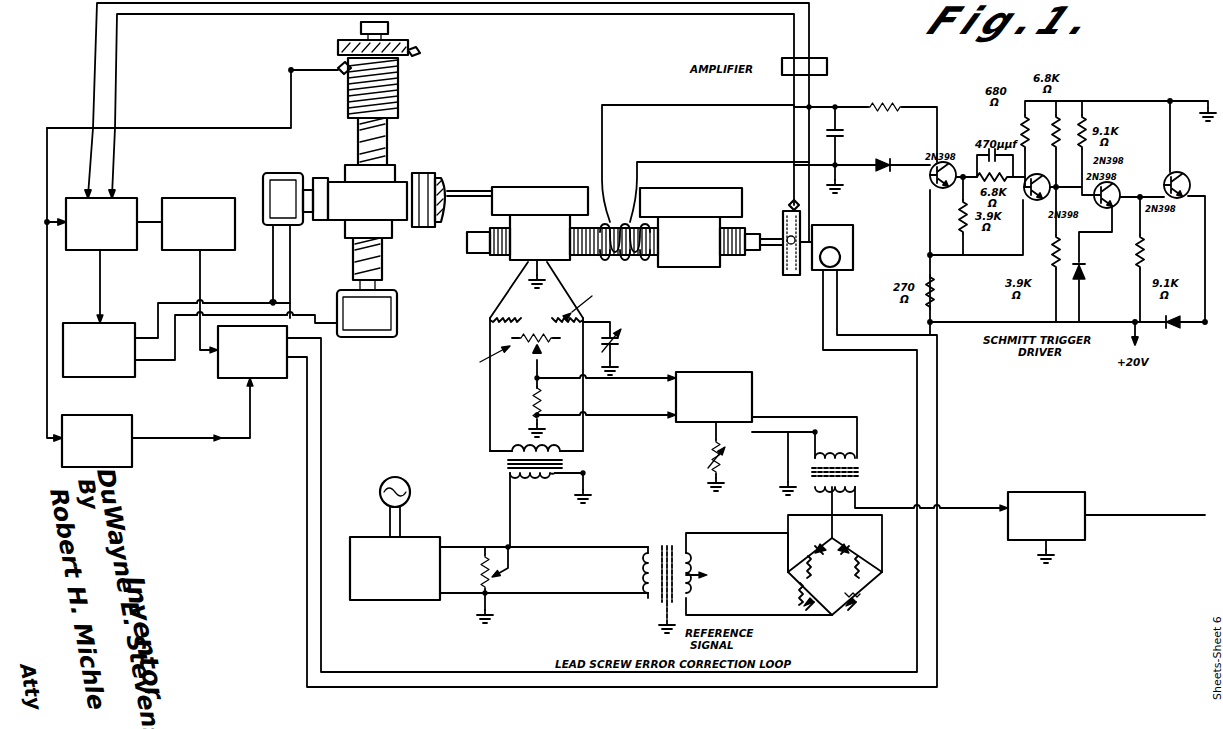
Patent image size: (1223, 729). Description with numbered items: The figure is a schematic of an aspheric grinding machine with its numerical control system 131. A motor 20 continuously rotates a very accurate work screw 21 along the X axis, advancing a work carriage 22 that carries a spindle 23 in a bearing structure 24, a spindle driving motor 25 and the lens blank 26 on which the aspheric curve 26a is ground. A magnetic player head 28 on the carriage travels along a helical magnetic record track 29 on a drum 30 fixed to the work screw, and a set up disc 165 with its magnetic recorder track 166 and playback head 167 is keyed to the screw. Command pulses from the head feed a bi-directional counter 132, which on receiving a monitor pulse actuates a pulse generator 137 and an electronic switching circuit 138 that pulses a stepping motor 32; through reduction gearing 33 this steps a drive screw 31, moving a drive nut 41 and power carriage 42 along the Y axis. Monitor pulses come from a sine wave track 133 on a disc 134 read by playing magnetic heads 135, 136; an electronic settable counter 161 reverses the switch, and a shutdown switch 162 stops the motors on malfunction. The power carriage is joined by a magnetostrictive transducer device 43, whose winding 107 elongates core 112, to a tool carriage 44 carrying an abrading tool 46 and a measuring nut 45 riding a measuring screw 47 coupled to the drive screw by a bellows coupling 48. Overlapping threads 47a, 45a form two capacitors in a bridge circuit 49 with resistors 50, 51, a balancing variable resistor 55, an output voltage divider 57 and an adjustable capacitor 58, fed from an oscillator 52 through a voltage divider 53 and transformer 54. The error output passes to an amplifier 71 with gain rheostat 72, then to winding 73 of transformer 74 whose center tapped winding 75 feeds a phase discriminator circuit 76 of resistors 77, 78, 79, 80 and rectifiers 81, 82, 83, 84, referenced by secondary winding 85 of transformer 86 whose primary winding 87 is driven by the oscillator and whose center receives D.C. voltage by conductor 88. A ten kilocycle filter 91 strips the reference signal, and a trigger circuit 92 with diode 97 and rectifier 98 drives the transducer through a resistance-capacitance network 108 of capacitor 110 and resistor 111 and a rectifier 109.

The numerical control system 131 is at (221, 106).
The bi-directional counter 132 is at (130, 192).
The pulse generator 137 is at (193, 198).
The shutdown switch 162 is at (105, 378).
The electronic switching circuit 138 is at (230, 378).
The electronic settable counter 161 is at (132, 456).
The set up disc 165 is at (338, 42).
The magnetic recorder track 166 is at (408, 50).
The playback head 167 is at (416, 54).
The magnetic player head 28 is at (338, 72).
The helical magnetic record track 29 is at (398, 92).
The drum 30 is at (398, 114).
The work carriage 22 is at (345, 172).
The bearing structure 24 is at (385, 190).
The work screw 21 is at (353, 262).
The motor 20 is at (397, 310).
The spindle driving motor 25 is at (268, 225).
The spindle 23 is at (320, 220).
The lens blank 26 is at (435, 180).
The aspheric curve 26a is at (443, 222).
The abrading tool 46 is at (483, 190).
The tool carriage 44 is at (525, 187).
The magnetostrictive core 112 is at (563, 215).
The power carriage 42 is at (720, 188).
The winding 107 is at (658, 190).
The drive screw 31 is at (674, 267).
The measuring nut 45 is at (493, 222).
The measuring screw 47 is at (482, 253).
The threads of the nut 45a is at (510, 262).
The threads of the screw 47a is at (576, 254).
The bellows coupling 48 is at (620, 260).
The magnetostrictive transducer device 43 is at (600, 187).
The drive nut 41 is at (768, 227).
The disc 134 is at (780, 270).
The playing magnetic head 136 is at (786, 244).
The track 133 is at (788, 212).
The playing magnetic head 135 is at (792, 200).
The reduction gearing 33 is at (860, 214).
The stepping motor 32 is at (838, 266).
The resistance-capacitance network 108 is at (840, 100).
The resistor 111 is at (887, 112).
The capacitor 110 is at (840, 145).
The rectifier 109 is at (880, 162).
The diode rectifier 98 is at (1083, 278).
The diode 97 is at (1184, 290).
The trigger circuit 92 is at (1168, 340).
The bridge circuit 49 is at (488, 320).
The resistor 50 is at (500, 338).
The resistor 51 is at (560, 342).
The balancing variable resistor 55 is at (530, 346).
The voltage divider 57 is at (534, 394).
The adjustable capacitor 58 is at (614, 340).
The transformer 54 is at (506, 472).
The amplifier 71 is at (752, 392).
The rheostat 72 is at (712, 452).
The winding 73 is at (840, 458).
The transformer 74 is at (810, 470).
The center tapped winding 75 is at (880, 508).
The ten kilocycle filter 91 is at (1085, 540).
The oscillator 52 is at (403, 537).
The voltage divider 53 is at (484, 554).
The transformer 86 is at (669, 550).
The center tapped secondary winding 85 is at (720, 553).
The conductor 88 is at (712, 604).
The primary winding 87 is at (646, 600).
The phase discriminator circuit 76 is at (806, 627).
The rectifier 82 is at (814, 543).
The resistor 78 is at (795, 570).
The rectifier 83 is at (858, 546).
The resistor 79 is at (866, 572).
The resistor 77 is at (812, 585).
The rectifier 81 is at (785, 605).
The resistor 80 is at (868, 590).
The rectifier 84 is at (860, 603).